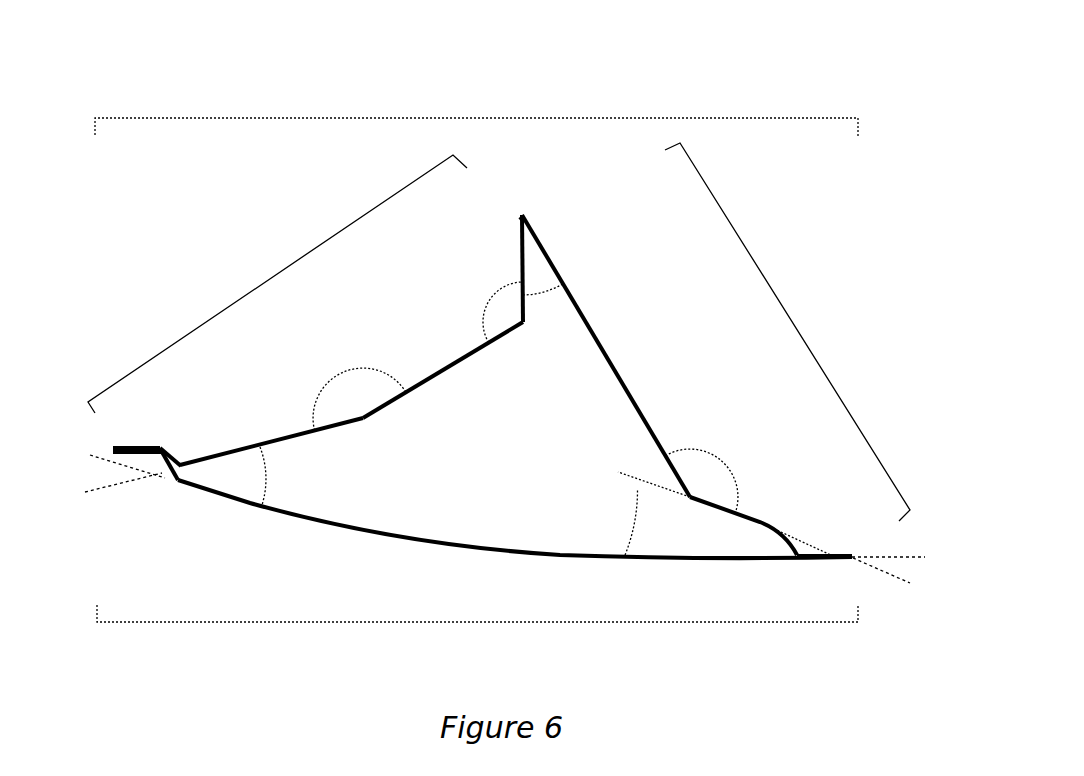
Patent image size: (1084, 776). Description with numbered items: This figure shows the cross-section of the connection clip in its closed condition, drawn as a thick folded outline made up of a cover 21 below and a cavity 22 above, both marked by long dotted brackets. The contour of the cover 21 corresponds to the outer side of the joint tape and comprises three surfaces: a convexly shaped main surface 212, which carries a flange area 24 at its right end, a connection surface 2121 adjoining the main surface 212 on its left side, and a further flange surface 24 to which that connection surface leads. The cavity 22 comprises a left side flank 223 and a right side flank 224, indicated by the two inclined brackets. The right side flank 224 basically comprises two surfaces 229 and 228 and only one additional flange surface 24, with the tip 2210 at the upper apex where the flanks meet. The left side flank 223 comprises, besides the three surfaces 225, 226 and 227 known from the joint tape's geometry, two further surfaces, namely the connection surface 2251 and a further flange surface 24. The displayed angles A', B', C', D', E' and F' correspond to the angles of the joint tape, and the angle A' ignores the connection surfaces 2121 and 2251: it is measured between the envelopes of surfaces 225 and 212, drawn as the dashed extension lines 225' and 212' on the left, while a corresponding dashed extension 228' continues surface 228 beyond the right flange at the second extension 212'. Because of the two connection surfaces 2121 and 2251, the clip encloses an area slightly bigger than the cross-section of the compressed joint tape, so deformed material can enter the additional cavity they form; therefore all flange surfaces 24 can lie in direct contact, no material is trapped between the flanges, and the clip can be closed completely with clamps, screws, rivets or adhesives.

The cavity 22 is at (475, 118).
The cover 21 is at (478, 622).
The left side flank 223 is at (270, 279).
The right side flank 224 is at (797, 328).
The flange surface 24 is at (138, 440).
The connection surface 2251 is at (177, 452).
The connection surface 2121 is at (158, 470).
The surface 225 is at (271, 413).
The surface 226 is at (408, 365).
The surface 227 is at (508, 275).
The apex / tip of upper shell 2210 is at (523, 213).
The surface 229 is at (640, 373).
The surface 228 is at (756, 501).
The main surface 212 is at (515, 540).
The extension line of bottom wall 212 212' is at (505, 506).
The extension line of wall section 225 225' is at (103, 487).
The extension line of wall section 228 228' is at (900, 576).
The angle A' is at (248, 476).
The angle B' is at (729, 523).
The angle C' is at (678, 481).
The angle D' is at (359, 399).
The angle E' is at (503, 312).
The angle F' is at (543, 283).